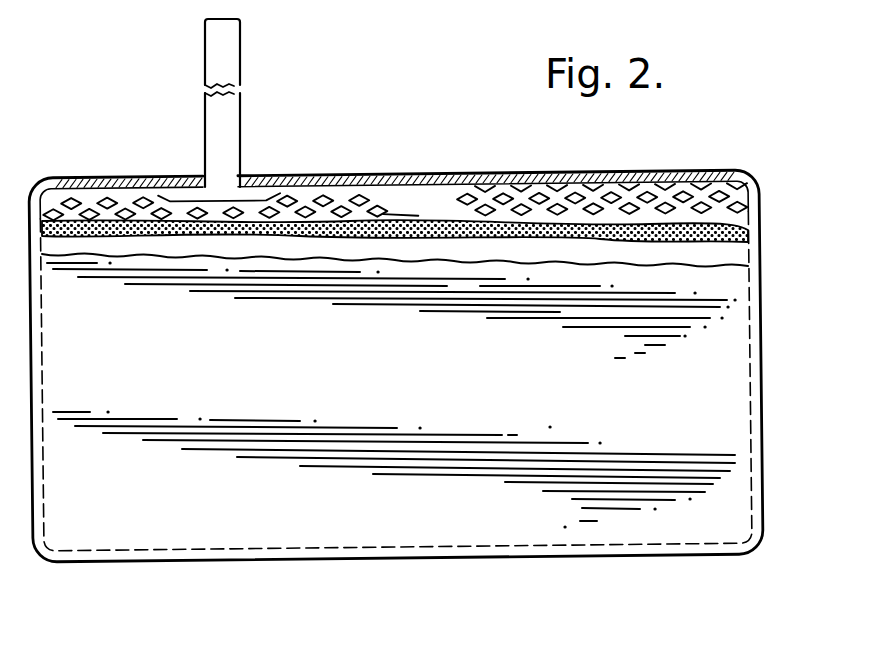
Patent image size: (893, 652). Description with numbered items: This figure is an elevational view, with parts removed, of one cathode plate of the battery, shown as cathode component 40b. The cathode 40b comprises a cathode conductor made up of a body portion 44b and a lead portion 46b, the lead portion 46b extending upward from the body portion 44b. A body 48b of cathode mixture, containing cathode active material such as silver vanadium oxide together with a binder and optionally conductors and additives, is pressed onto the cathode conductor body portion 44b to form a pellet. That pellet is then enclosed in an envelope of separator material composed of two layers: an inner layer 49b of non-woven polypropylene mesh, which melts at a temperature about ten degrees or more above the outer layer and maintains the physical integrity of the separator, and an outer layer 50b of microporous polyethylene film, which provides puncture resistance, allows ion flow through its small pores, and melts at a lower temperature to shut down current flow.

The cathode component 40b is at (527, 555).
The body portion 44b is at (405, 195).
The lead portion 46b is at (238, 72).
The body of cathode mixture 48b is at (452, 228).
The inner layer 49b is at (736, 250).
The outer layer 50b is at (724, 362).